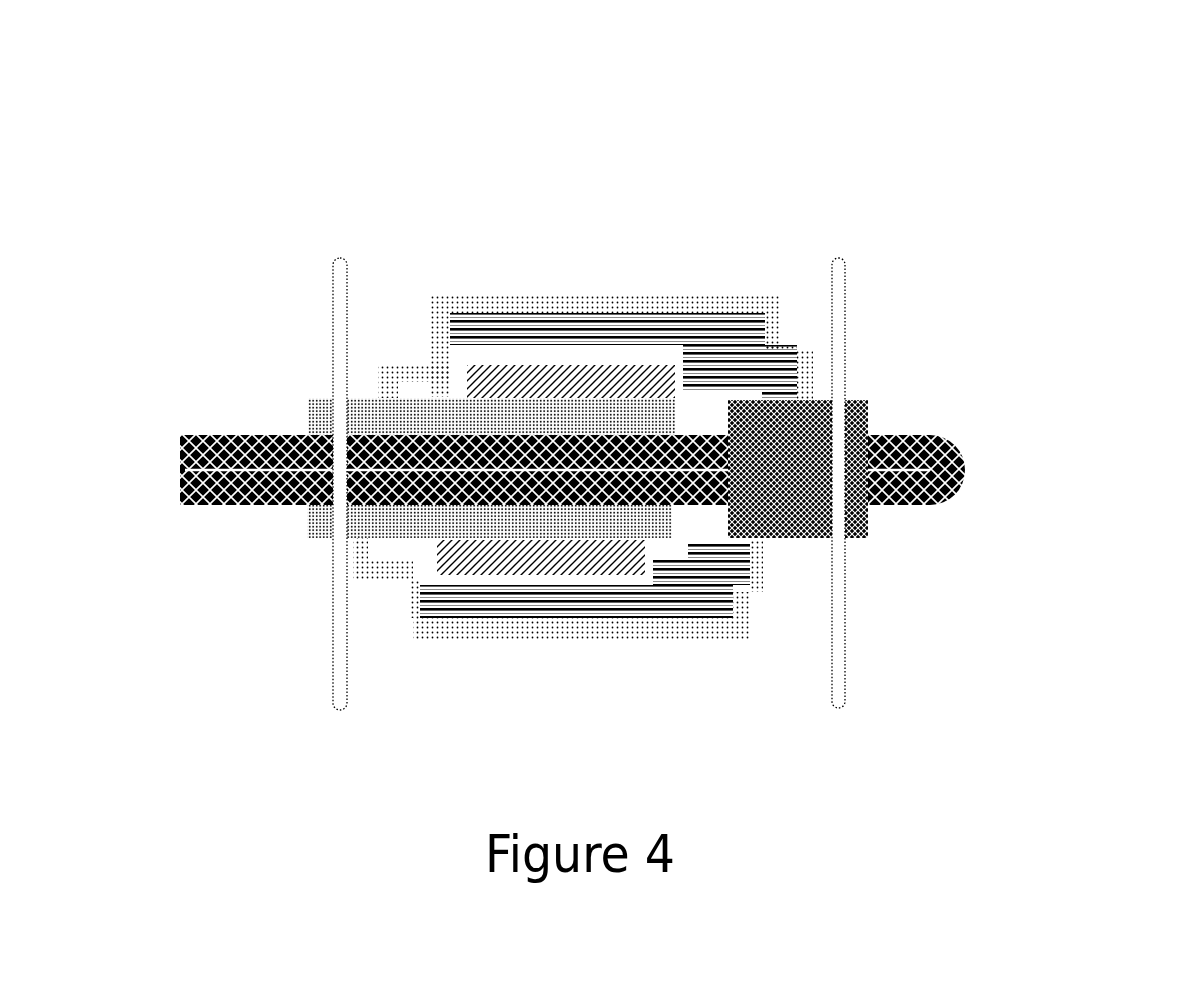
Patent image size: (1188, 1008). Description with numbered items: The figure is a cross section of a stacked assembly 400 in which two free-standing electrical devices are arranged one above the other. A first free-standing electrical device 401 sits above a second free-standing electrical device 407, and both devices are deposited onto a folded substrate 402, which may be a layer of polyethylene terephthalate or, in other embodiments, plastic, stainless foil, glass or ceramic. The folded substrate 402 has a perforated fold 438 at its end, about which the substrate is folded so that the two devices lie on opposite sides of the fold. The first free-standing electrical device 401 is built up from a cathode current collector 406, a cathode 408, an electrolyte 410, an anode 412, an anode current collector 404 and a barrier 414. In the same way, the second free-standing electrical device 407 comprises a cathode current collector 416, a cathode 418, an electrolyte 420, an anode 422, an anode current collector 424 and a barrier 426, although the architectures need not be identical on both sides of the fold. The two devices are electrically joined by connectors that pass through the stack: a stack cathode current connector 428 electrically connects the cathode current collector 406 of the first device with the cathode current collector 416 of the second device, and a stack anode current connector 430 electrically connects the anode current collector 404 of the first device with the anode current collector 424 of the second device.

The electric motor assembly 400 is at (1062, 44).
The first free-standing electrical device 401 is at (802, 265).
The folded substrate 402 is at (914, 435).
The anode current collector 404 is at (868, 410).
The cathode current collector 406 is at (308, 415).
The second free-standing electrical device 407 is at (814, 616).
The cathode 408 is at (571, 381).
The electrolyte 410 is at (450, 395).
The anode 412 is at (623, 356).
The barrier 414 is at (728, 297).
The cathode current collector 416 is at (307, 520).
The cathode 418 is at (541, 557).
The electrolyte 420 is at (418, 545).
The anode 422 is at (585, 580).
The anode current collector 424 is at (870, 540).
The barrier 426 is at (648, 640).
The stack cathode current connector 428 is at (333, 322).
The stack anode current connector 430 is at (845, 326).
The perforated fold 438 is at (987, 464).